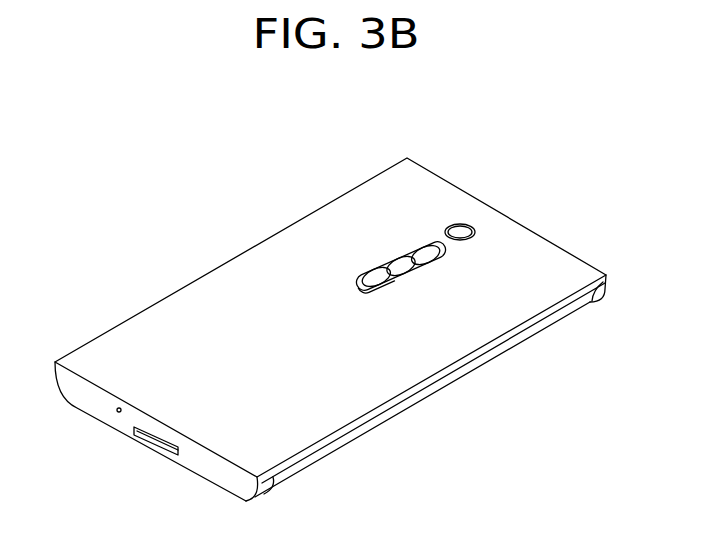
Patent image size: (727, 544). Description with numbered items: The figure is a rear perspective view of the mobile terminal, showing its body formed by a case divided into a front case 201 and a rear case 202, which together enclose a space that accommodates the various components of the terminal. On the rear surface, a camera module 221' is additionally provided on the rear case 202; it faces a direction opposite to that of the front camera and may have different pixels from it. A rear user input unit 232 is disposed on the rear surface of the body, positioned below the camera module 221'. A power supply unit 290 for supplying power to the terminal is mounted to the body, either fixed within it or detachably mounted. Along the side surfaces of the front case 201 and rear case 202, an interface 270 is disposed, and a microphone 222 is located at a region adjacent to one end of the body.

The front case 201 is at (603, 302).
The rear case 202 is at (345, 329).
The camera module 221' is at (458, 184).
The microphone 222 is at (116, 412).
The rear user input unit 232 is at (397, 265).
The interface 270 is at (160, 443).
The power supply unit 290 is at (245, 265).